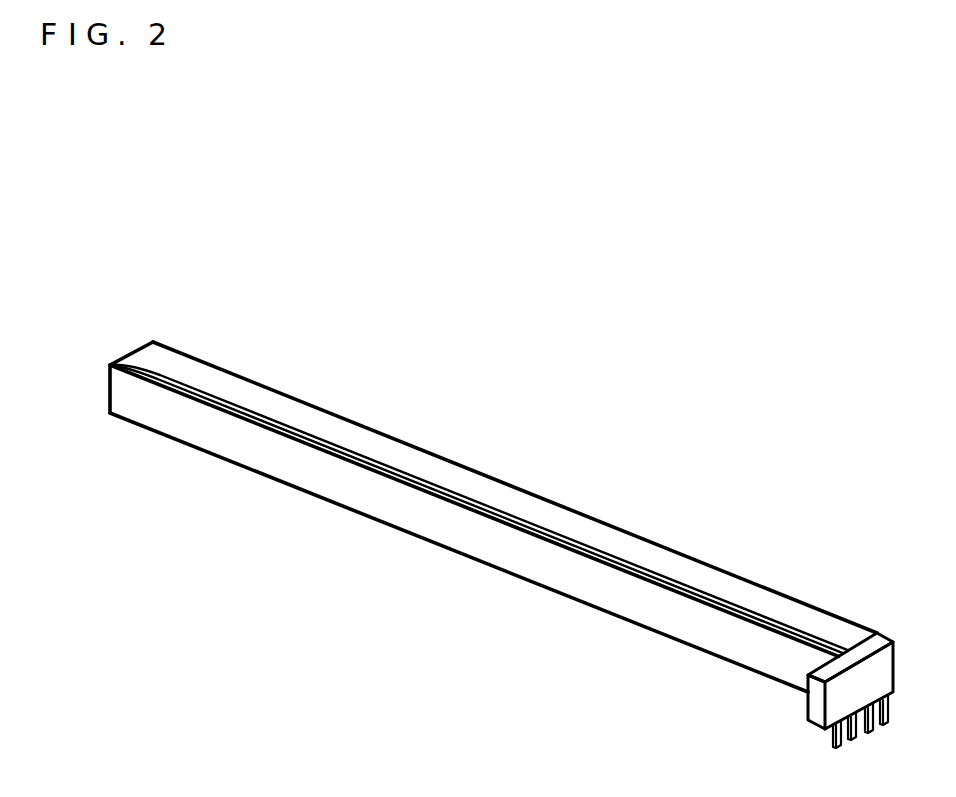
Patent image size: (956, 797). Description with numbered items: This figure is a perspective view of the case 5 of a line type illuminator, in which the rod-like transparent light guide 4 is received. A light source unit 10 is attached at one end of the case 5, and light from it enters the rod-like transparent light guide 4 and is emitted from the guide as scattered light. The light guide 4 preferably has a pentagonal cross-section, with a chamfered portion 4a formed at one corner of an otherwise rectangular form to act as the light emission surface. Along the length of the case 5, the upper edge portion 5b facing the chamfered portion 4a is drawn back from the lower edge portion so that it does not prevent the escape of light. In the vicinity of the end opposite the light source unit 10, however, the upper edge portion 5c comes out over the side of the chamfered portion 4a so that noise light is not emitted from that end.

The rod-like transparent light guide 4 is at (649, 607).
The chamfered portion 4a is at (338, 458).
The case 5 is at (399, 522).
The upper edge portion 5b is at (463, 480).
The upper edge portion 5c is at (160, 362).
The light source unit 10 is at (858, 656).